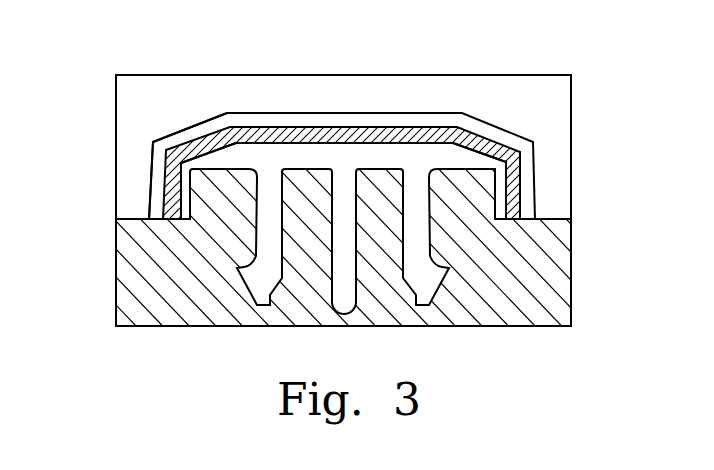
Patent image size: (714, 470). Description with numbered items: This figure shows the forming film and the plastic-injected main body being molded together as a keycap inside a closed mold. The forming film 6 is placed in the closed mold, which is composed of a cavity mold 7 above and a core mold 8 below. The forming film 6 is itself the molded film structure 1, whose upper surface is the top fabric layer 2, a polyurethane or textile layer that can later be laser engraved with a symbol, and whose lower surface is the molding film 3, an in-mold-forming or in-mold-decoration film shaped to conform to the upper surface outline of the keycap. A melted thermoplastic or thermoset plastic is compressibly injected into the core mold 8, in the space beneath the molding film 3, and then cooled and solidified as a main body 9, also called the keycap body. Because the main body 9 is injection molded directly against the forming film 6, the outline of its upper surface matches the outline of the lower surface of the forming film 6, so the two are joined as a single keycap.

The film structure 1 is at (535, 172).
The top fabric layer 2 is at (528, 191).
The molding film 3 is at (511, 200).
The forming film 6 is at (150, 170).
The cavity mold 7 is at (142, 88).
The core mold 8 is at (143, 278).
The main body 9 is at (183, 198).